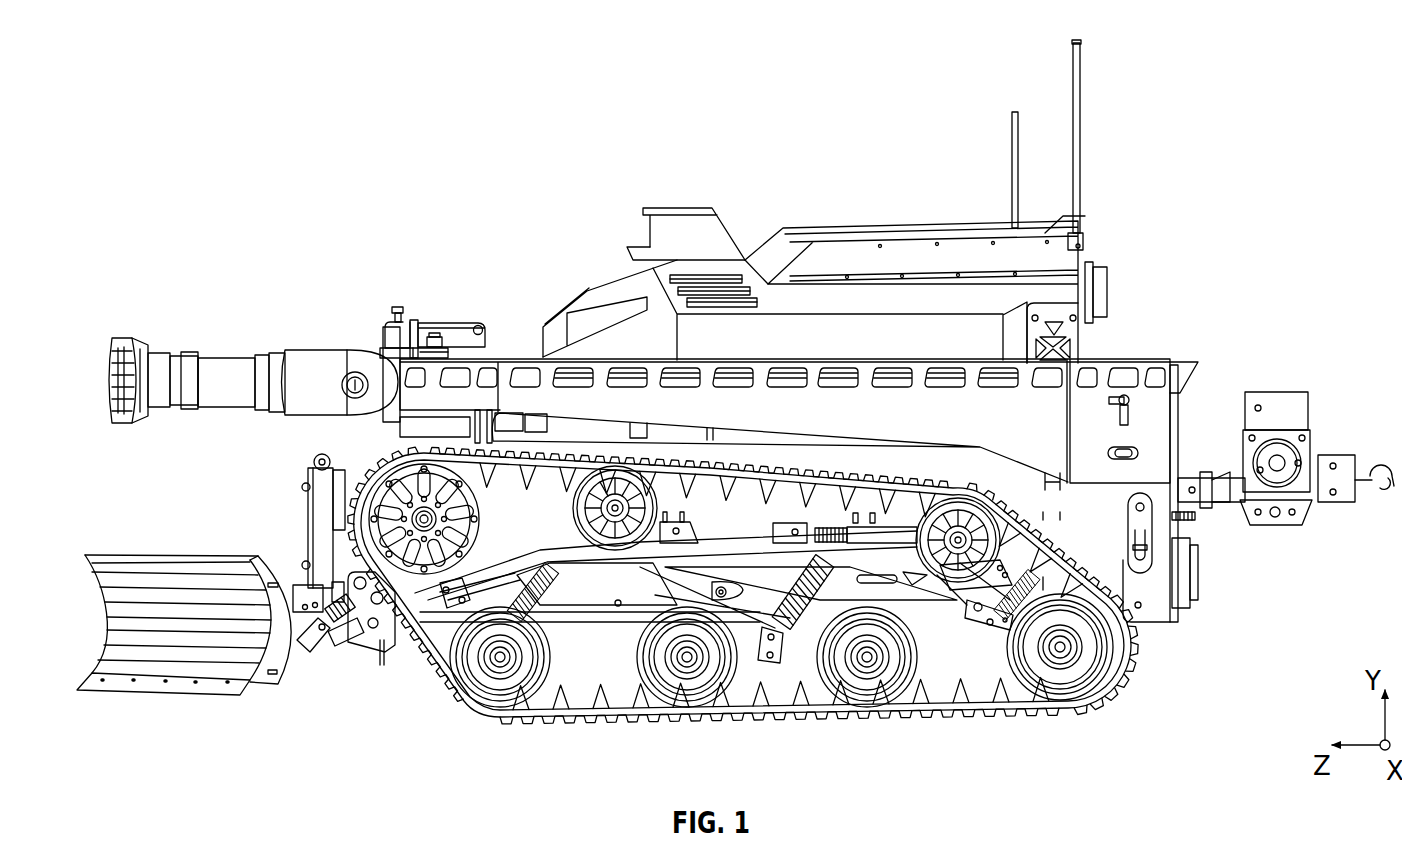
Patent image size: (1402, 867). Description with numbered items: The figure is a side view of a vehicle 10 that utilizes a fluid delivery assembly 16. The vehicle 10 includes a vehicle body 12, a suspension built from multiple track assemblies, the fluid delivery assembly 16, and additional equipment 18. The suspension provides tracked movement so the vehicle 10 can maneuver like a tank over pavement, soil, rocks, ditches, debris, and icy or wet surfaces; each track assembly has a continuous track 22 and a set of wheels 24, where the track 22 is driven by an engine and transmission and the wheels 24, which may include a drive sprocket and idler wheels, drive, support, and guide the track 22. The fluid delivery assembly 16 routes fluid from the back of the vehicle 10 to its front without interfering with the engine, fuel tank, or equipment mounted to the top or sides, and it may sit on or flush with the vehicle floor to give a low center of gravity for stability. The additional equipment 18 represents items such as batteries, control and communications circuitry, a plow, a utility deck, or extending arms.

The vehicle 10 is at (134, 189).
The vehicle body 12 is at (1200, 416).
The fluid delivery assembly 16 is at (1190, 634).
The additional equipment 18 is at (1095, 203).
The continuous track 22 is at (584, 714).
The set of wheels 24 is at (688, 699).